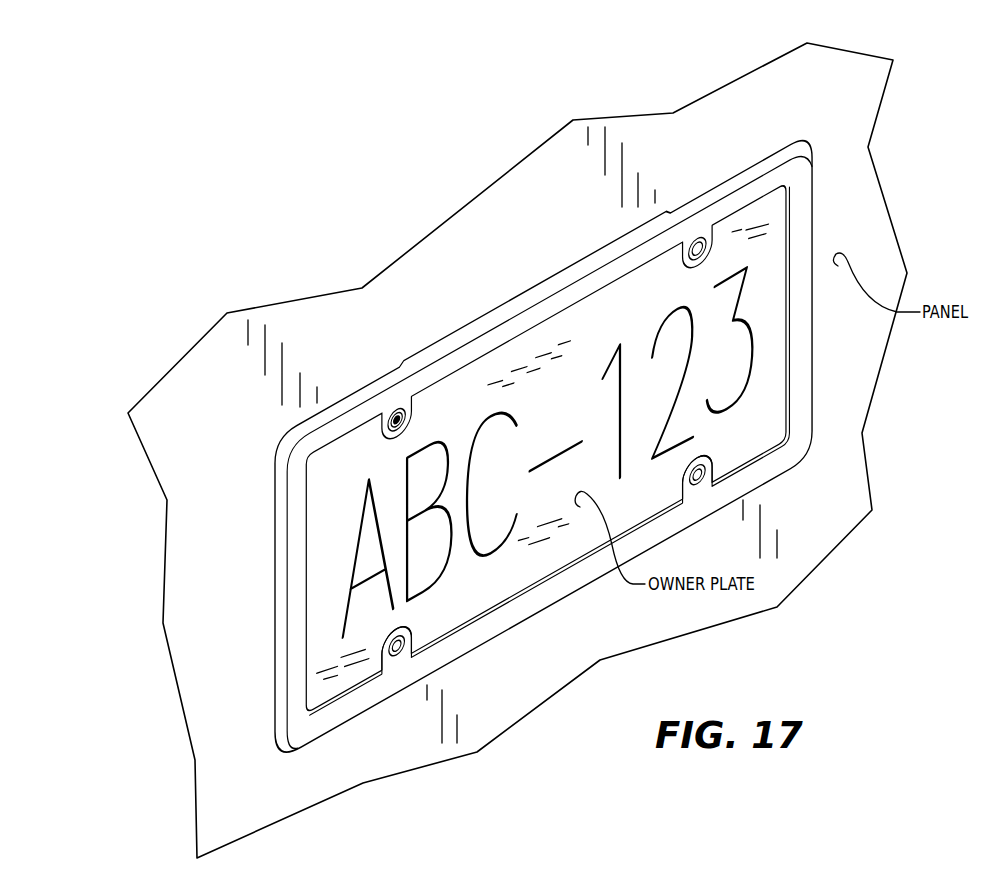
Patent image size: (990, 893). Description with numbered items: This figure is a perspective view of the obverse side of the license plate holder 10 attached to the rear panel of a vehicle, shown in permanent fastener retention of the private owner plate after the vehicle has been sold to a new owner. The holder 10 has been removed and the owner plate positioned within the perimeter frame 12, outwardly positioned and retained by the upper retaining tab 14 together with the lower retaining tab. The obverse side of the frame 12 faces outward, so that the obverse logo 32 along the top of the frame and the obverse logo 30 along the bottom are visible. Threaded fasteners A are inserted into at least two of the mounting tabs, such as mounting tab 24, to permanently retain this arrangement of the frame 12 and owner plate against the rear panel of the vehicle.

The license plate holder 10 is at (722, 175).
The perimeter frame 12 is at (760, 152).
The upper retaining tab 14 is at (481, 318).
The mounting tab 24 is at (413, 412).
The obverse logo 30 is at (550, 600).
The obverse logo 32 is at (548, 312).
The threaded fasteners A is at (383, 430).